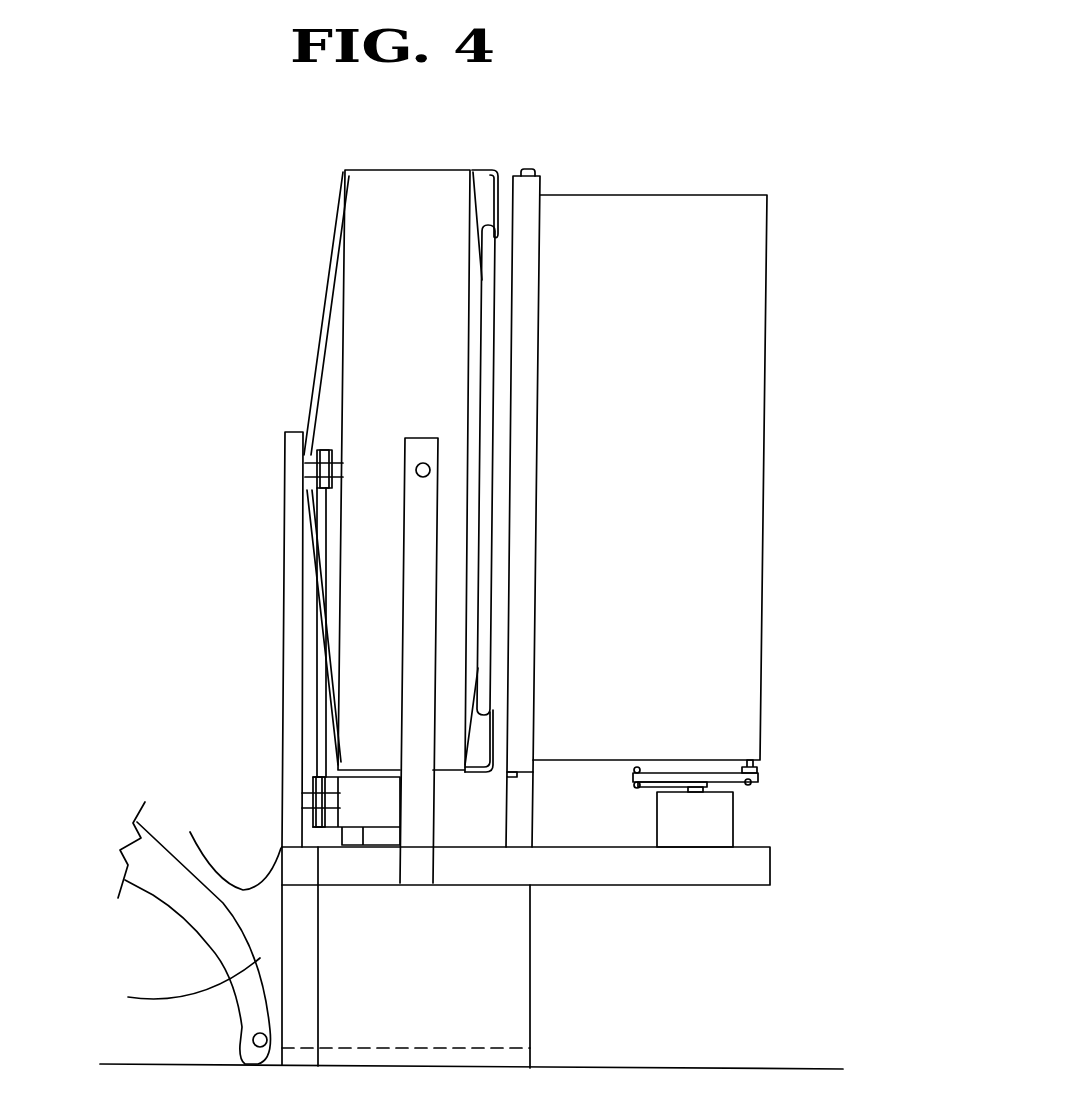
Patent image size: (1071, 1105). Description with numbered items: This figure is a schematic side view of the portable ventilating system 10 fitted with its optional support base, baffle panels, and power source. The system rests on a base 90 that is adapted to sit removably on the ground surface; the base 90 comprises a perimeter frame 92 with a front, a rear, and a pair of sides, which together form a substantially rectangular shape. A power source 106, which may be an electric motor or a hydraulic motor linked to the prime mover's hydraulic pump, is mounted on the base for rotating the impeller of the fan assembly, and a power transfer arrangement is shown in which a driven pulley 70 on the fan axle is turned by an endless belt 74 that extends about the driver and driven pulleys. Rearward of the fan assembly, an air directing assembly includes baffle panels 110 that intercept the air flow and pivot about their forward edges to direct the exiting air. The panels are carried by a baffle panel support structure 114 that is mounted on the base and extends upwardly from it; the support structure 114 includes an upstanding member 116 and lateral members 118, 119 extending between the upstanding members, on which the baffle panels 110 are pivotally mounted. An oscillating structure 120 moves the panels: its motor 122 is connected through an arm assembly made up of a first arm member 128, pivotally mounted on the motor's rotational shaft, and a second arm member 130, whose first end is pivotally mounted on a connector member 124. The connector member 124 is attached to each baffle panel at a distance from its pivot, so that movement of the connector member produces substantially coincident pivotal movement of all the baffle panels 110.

The portable ventilating system 10 is at (215, 180).
The driven pulley 70 is at (327, 457).
The endless belt 74 is at (318, 695).
The base 90 is at (507, 978).
The perimeter frame 92 is at (752, 872).
The power source 106 is at (367, 797).
The baffle panels 110 is at (675, 223).
The baffle panel support structure 114 is at (560, 437).
The upstanding member 116 is at (525, 208).
The lateral member 118 is at (515, 185).
The lateral member 119 is at (535, 762).
The oscillating structure 120 is at (756, 792).
The motor 122 is at (708, 825).
The connector member 124 is at (758, 770).
The first arm member 128 is at (650, 786).
The second arm member 130 is at (663, 777).